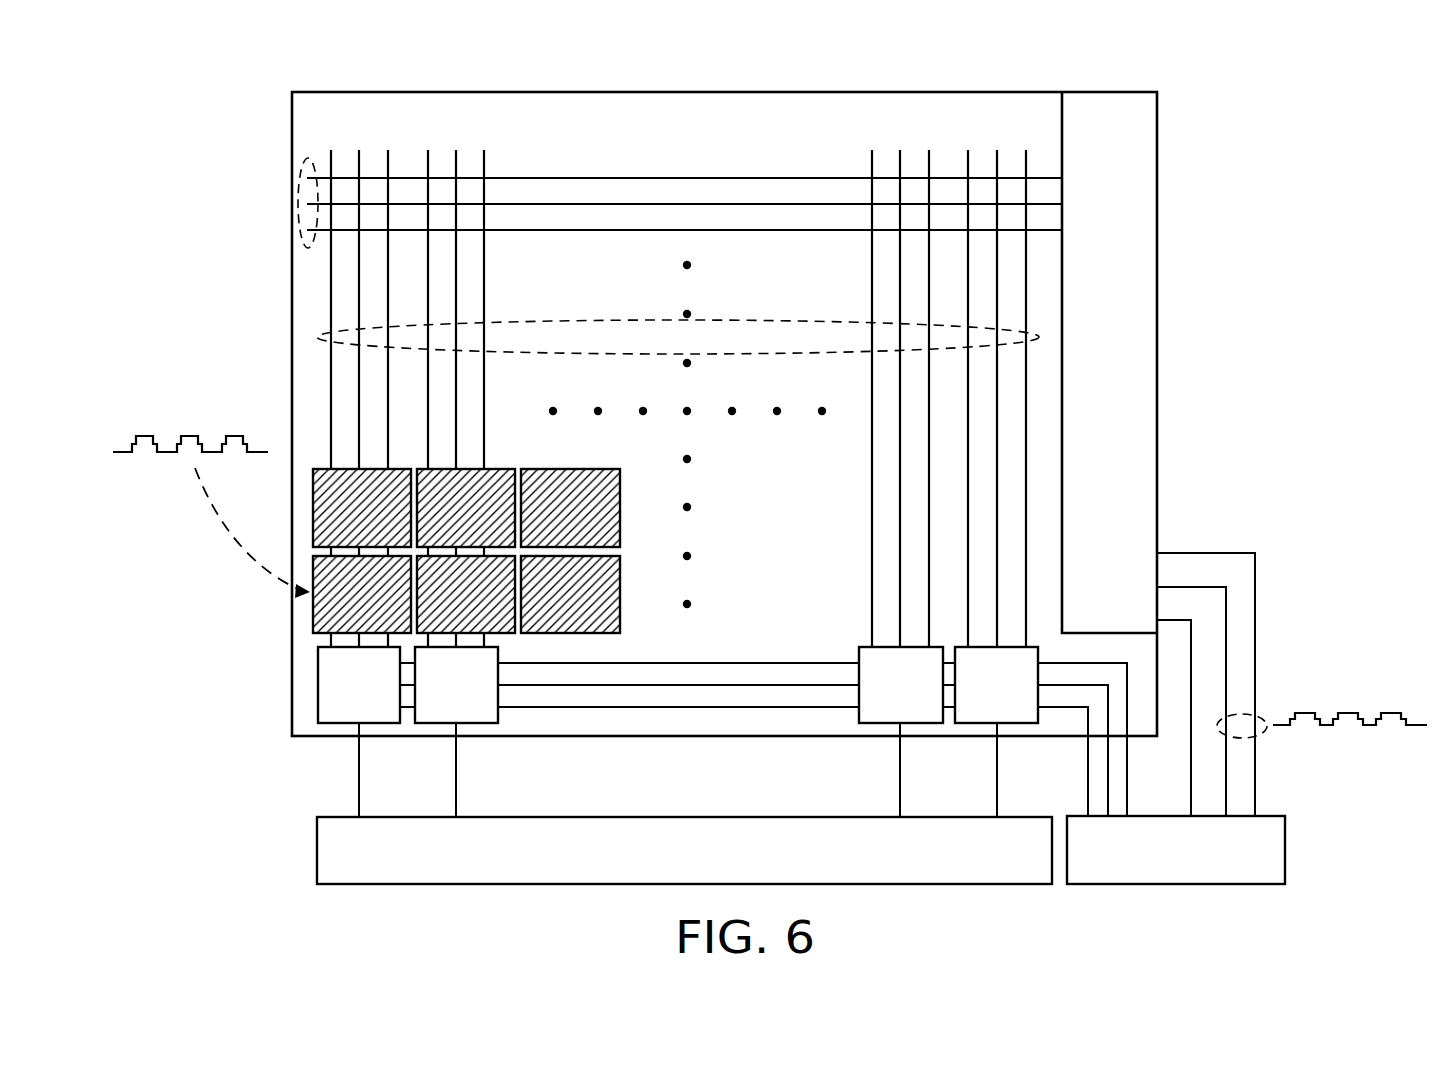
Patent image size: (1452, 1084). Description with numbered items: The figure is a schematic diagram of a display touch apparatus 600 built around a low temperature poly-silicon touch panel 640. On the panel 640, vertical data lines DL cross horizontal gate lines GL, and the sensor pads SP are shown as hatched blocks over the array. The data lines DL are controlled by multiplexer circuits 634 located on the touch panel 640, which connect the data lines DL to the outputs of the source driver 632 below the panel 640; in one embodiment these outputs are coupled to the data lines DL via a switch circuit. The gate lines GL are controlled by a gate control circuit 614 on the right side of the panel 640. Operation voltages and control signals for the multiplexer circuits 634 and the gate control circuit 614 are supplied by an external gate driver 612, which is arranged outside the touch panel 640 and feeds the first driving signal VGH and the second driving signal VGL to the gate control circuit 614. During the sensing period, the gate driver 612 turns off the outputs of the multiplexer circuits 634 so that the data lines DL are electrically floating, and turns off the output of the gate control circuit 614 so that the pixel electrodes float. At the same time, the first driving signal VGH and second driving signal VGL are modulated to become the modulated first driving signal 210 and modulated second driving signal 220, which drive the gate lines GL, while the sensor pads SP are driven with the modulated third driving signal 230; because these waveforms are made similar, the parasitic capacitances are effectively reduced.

The display touch apparatus 600 is at (1392, 915).
The LTPS touch panel 640 is at (977, 92).
The gate control circuit 614 is at (1137, 172).
The multiplexer circuits 634 is at (318, 683).
The source driver 632 is at (955, 884).
The gate driver 612 is at (1176, 884).
The modulated third driving signal 230 is at (188, 513).
The modulated first driving signal 210 is at (1327, 741).
The modulated second driving signal 220 is at (1327, 741).
The gate lines GL is at (300, 153).
The data lines DL is at (772, 318).
The sensor pads SP is at (312, 617).
The first driving signal VGH is at (1206, 669).
The second driving signal VGL is at (1191, 686).